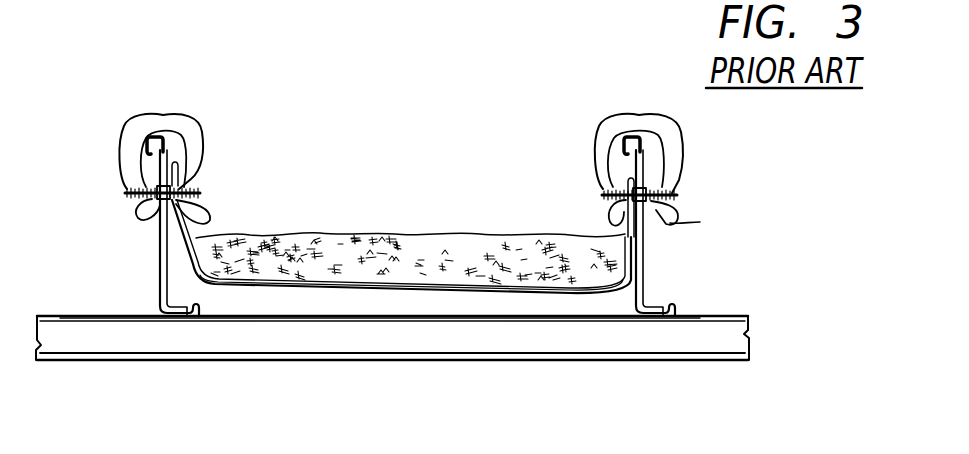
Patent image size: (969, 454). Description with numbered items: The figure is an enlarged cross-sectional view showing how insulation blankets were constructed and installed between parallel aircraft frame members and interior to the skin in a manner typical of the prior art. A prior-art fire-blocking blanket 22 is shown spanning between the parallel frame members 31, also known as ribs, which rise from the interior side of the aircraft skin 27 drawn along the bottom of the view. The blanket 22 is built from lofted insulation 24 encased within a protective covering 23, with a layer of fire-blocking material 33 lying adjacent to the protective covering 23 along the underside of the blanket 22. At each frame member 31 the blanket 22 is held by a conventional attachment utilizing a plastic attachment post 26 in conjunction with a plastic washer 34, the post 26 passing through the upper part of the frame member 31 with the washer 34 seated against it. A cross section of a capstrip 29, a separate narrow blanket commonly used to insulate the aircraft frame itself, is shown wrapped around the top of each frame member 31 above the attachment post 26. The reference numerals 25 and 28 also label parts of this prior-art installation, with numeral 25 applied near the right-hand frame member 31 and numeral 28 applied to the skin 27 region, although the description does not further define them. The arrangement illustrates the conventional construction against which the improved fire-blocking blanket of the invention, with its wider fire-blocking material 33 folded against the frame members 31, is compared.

The fire-blocking blanket 22 is at (392, 228).
The protective covering 23 is at (338, 228).
The lofted insulation 24 is at (505, 253).
The hanger strip 25 is at (645, 226).
The attachment post 26 is at (125, 192).
The skin 27 is at (697, 362).
The rail top surface 28 is at (82, 315).
The capstrip 29 is at (190, 133).
The frame member 31 is at (154, 132).
The fire-blocking material 33 is at (614, 294).
The washer 34 is at (200, 192).